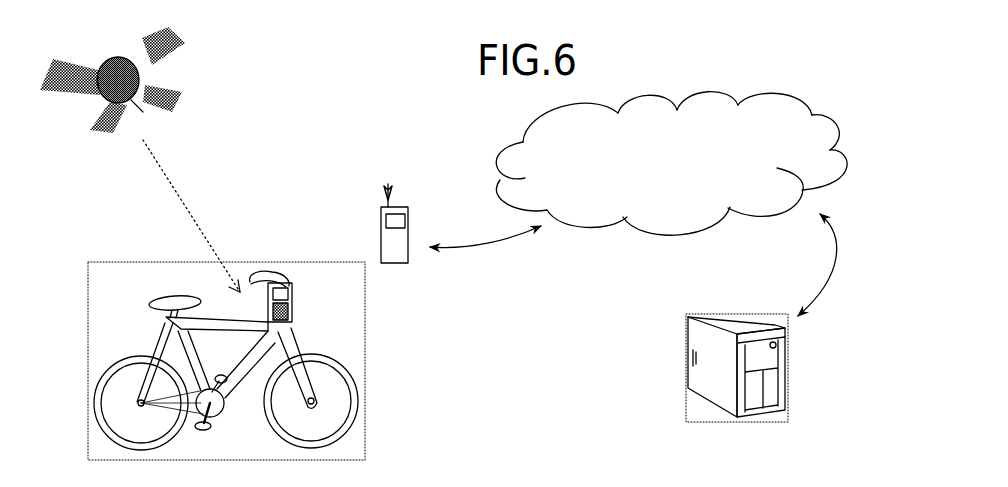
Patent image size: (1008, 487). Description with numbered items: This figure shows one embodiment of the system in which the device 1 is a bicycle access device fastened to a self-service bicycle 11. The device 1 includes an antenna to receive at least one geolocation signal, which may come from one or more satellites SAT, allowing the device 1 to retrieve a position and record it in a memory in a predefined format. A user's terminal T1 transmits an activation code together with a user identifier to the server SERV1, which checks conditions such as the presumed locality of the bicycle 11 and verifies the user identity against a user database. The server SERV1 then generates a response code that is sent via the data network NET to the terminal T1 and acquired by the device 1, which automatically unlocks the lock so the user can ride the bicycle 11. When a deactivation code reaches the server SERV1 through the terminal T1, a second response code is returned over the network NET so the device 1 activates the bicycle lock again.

The device 1 is at (293, 303).
The bicycle 11 is at (97, 392).
The terminal T1 is at (373, 222).
The satellite SAT is at (147, 64).
The data network NET is at (671, 164).
The server SERV1 is at (725, 380).